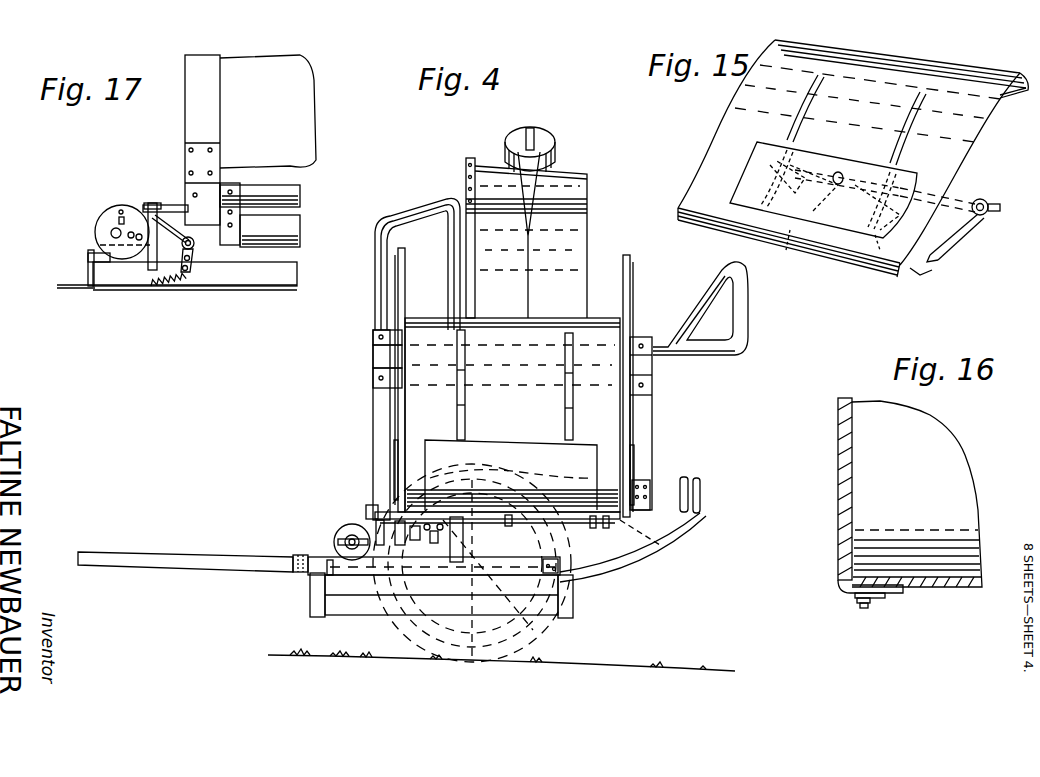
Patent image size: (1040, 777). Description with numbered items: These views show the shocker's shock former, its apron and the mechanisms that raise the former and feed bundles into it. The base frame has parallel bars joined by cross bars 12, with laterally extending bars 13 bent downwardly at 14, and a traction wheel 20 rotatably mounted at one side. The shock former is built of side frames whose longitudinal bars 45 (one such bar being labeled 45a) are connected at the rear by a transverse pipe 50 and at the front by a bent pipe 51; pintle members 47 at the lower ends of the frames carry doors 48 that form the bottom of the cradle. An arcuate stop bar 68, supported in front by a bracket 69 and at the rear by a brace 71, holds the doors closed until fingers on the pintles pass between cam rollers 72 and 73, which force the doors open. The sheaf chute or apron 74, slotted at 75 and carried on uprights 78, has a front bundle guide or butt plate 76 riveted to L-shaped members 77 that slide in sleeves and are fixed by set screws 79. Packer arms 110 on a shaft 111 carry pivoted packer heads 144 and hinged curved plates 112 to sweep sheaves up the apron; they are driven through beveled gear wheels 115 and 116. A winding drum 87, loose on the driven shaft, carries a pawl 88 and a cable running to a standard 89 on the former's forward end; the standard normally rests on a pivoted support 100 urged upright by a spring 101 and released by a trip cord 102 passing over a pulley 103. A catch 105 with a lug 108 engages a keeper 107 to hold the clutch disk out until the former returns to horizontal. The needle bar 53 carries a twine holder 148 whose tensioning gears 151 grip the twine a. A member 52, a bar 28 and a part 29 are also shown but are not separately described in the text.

In FIG. 17, the upright frame member 45a is at (312, 140).
In FIG. 17, the pintle members 47 is at (290, 188).
In FIG. 4, the pintle members 47 is at (648, 500).
In FIG. 17, the doors 48 is at (290, 232).
In FIG. 17, the winding drum 87 is at (110, 218).
In FIG. 17, the pawl 88 is at (131, 230).
In FIG. 17, the standard 89 is at (198, 236).
In FIG. 17, the catch 105 is at (140, 203).
In FIG. 4, the catch 105 is at (360, 518).
In FIG. 17, the keeper 107 is at (152, 203).
In FIG. 17, the lug 108 is at (177, 200).
In FIG. 4, the lug 108 is at (378, 510).
In FIG. 17, the cross bars 12 is at (88, 268).
In FIG. 4, the cross bars 12 is at (306, 554).
In FIG. 17, the pulley 103 is at (103, 264).
In FIG. 17, the trip cord 102 is at (147, 252).
In FIG. 17, the spring 101 is at (163, 286).
In FIG. 17, the pivoted support 100 is at (191, 262).
In FIG. 4, the intermeshing gears 151 is at (533, 130).
In FIG. 4, the twine holder 148 is at (548, 148).
In FIG. 4, the needle bar 53 is at (507, 166).
In FIG. 4, the upright panel 52 is at (573, 180).
In FIG. 4, the transversely extending pipe 51 is at (424, 206).
In FIG. 4, the twine a is at (526, 292).
In FIG. 4, the L-shaped members 77 is at (395, 298).
In FIG. 16, the L-shaped members 77 is at (838, 548).
In FIG. 4, the front bundle guide 76 is at (405, 302).
In FIG. 16, the front bundle guide 76 is at (840, 503).
In FIG. 4, the transversely extending bar or pipe 50 is at (708, 284).
In FIG. 4, the longitudinally extending bar 45 is at (374, 374).
In FIG. 4, the slots 75 is at (565, 392).
In FIG. 15, the slots 75 is at (803, 125).
In FIG. 4, the chute or apron 74 is at (519, 452).
In FIG. 15, the chute or apron 74 is at (738, 138).
In FIG. 16, the chute or apron 74 is at (953, 462).
In FIG. 4, the curved plate or head 112 is at (512, 455).
In FIG. 15, the curved plate or head 112 is at (842, 240).
In FIG. 4, the cam roller 73 is at (680, 490).
In FIG. 4, the cam roller 72 is at (703, 480).
In FIG. 4, the brace 71 is at (663, 515).
In FIG. 4, the arcuate stop bar 68 is at (615, 560).
In FIG. 4, the bracket 69 is at (452, 545).
In FIG. 4, the beveled gear wheel 116 is at (343, 530).
In FIG. 4, the beveled gear wheel 115 is at (374, 570).
In FIG. 4, the tongue bar 28 is at (205, 560).
In FIG. 4, the bend 14 is at (310, 583).
In FIG. 4, the laterally extending bars 13 is at (312, 614).
In FIG. 4, the wheel rim 29 is at (567, 628).
In FIG. 4, the traction wheel 20 is at (540, 638).
In FIG. 15, the shaft 111 is at (995, 202).
In FIG. 15, the packer arms 110 is at (790, 245).
In FIG. 15, the packer head 144 is at (880, 262).
In FIG. 16, the uprights 78 is at (870, 600).
In FIG. 16, the set screws 79 is at (861, 607).